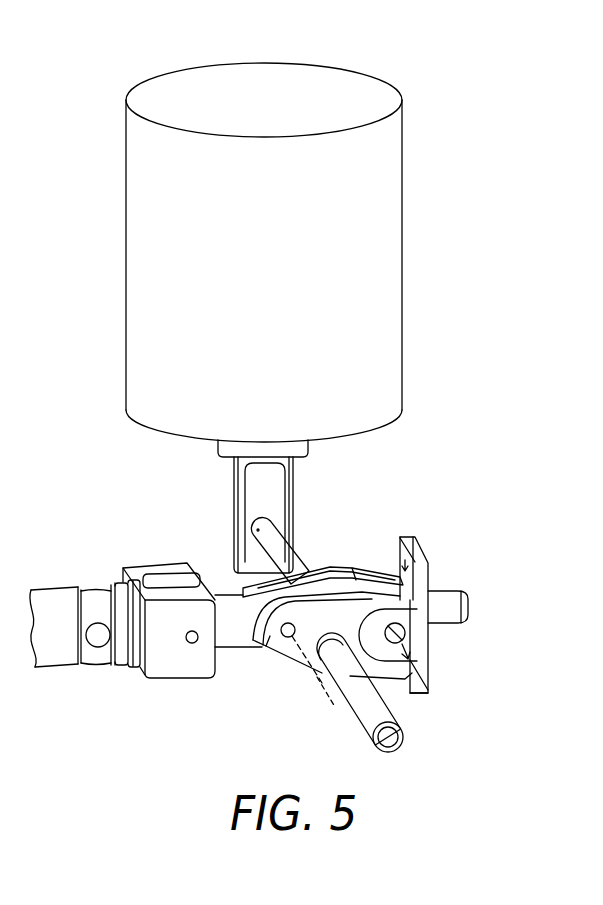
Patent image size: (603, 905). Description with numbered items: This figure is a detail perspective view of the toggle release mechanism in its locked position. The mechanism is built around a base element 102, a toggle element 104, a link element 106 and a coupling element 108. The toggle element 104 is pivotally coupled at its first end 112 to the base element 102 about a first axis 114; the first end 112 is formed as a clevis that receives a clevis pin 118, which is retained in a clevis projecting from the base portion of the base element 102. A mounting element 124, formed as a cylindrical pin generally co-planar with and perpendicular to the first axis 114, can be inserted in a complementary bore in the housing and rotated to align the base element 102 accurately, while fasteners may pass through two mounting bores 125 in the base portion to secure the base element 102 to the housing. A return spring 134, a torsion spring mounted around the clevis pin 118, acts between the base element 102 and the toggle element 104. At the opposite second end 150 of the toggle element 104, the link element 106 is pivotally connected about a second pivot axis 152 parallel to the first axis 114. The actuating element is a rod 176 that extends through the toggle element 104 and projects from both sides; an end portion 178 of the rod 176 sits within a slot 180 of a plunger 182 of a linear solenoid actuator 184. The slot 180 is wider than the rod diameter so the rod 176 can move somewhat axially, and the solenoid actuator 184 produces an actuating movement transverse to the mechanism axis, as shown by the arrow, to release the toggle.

The base element 102 is at (468, 686).
The toggle element 104 is at (289, 658).
The link element 106 is at (230, 614).
The coupling element 108 is at (160, 712).
The first end 112 is at (408, 724).
The first axis 114 is at (484, 713).
The clevis pin 118 is at (460, 638).
The mounting element 124 is at (510, 607).
The mounting bores 125 is at (402, 560).
The return spring 134 is at (422, 582).
The second end 150 is at (267, 646).
The second pivot axis 152 is at (332, 698).
The rod 176 is at (328, 537).
The end portion 178 is at (252, 533).
The slot 180 is at (328, 507).
The plunger 182 is at (328, 478).
The linear solenoid actuator 184 is at (428, 250).